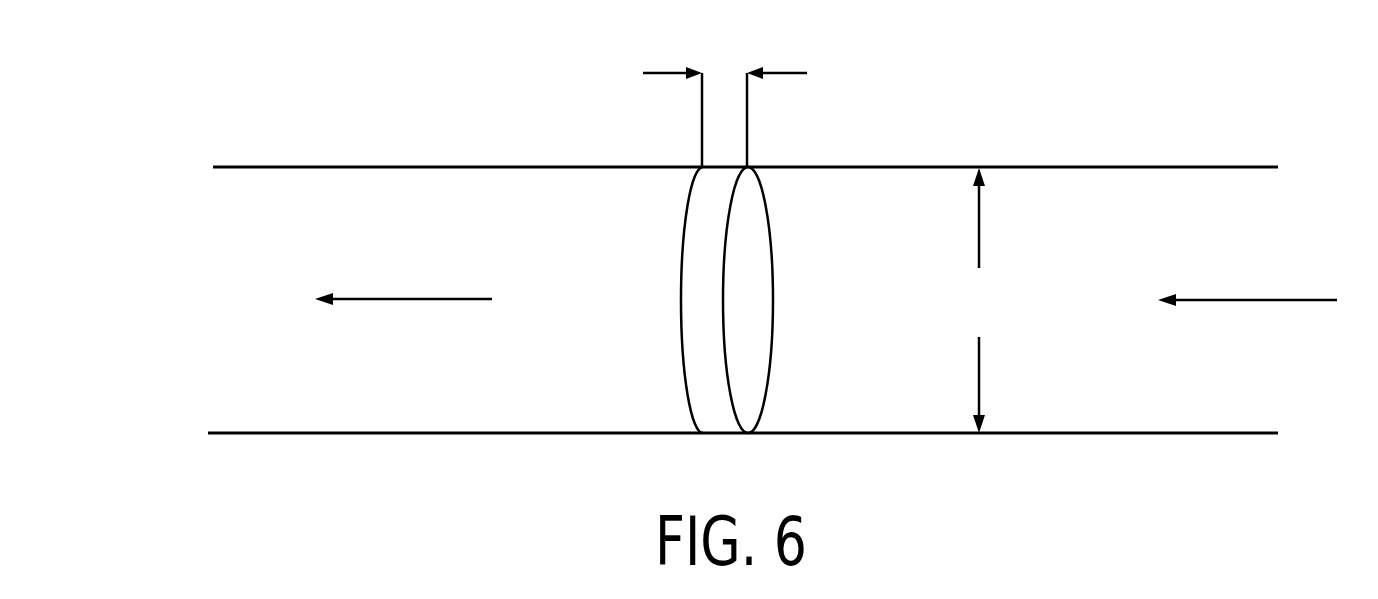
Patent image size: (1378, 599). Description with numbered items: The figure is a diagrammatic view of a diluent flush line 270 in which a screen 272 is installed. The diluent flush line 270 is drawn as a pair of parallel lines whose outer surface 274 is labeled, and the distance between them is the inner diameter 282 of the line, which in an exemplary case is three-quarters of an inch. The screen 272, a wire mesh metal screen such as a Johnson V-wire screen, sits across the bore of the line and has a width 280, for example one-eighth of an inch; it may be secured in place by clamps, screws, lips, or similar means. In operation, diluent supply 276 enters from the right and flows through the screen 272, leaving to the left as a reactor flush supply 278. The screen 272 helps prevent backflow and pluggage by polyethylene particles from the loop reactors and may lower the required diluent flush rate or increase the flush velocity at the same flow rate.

The diluent flush line 270 is at (114, 239).
The screen 272 is at (752, 310).
The outer surface 274 is at (1127, 167).
The diluent supply 276 is at (1255, 299).
The reactor flush supply 278 is at (413, 298).
The width 280 is at (725, 94).
The inner diameter 282 is at (980, 300).